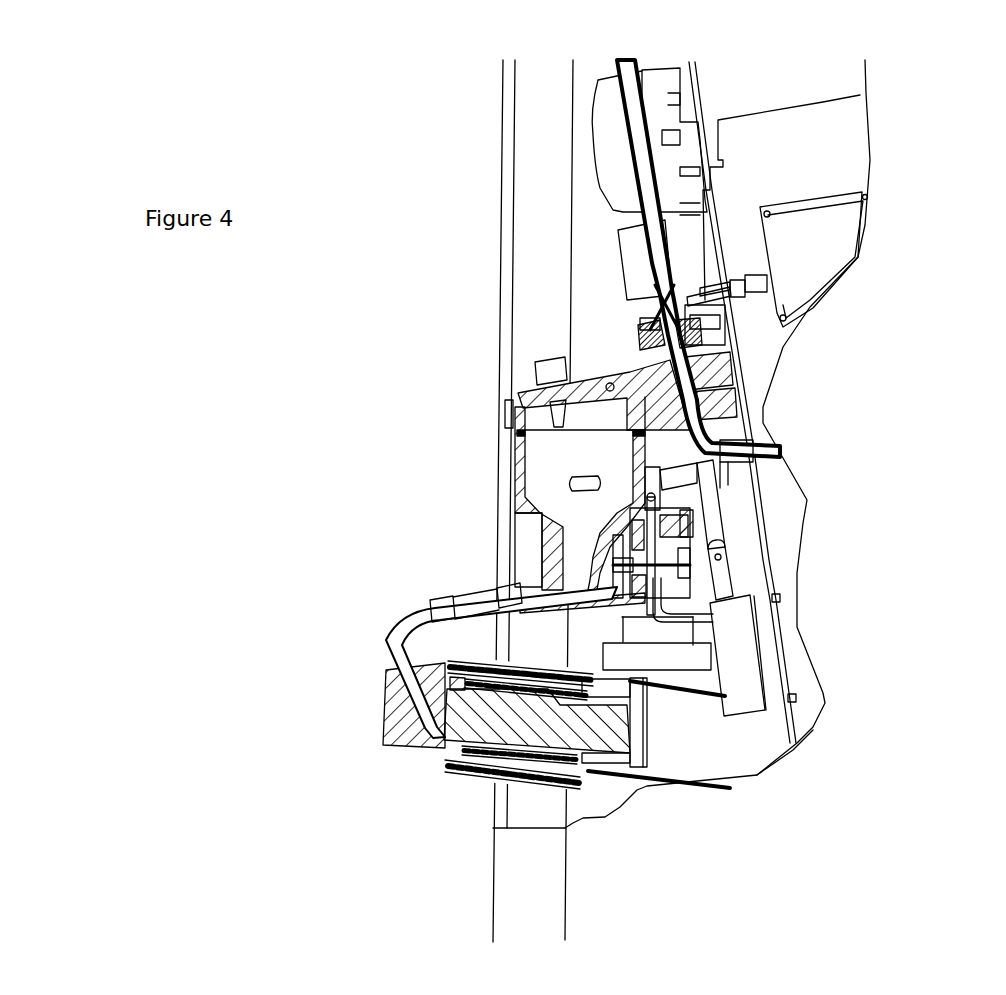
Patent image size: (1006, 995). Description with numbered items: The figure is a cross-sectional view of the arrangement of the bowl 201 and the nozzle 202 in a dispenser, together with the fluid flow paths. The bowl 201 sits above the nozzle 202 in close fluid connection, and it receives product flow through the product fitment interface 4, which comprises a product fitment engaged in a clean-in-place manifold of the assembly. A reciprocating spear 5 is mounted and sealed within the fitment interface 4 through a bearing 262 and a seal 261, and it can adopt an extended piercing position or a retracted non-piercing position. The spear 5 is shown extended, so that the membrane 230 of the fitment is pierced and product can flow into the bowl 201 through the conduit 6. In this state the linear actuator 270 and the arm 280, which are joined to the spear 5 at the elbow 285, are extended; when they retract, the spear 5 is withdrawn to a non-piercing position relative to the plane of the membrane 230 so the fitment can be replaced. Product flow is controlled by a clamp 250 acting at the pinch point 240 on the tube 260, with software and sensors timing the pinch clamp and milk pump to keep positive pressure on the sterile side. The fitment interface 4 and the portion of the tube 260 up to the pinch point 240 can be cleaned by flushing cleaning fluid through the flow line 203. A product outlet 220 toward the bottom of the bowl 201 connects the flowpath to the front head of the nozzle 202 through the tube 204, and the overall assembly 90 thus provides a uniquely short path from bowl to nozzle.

The product fitment interface 4 is at (572, 340).
The reciprocating spear 5 is at (657, 312).
The conduit 6 is at (652, 403).
The tube assembly 90 is at (408, 779).
The bowl 201 is at (527, 477).
The nozzle 202 is at (383, 707).
The flow line 203 is at (755, 450).
The tube 204 is at (400, 636).
The product outlet 220 is at (527, 597).
The membrane 230 is at (567, 304).
The pinch point 240 is at (672, 282).
The clamp 250 is at (693, 283).
The tube 260 is at (768, 290).
The seal 261 is at (710, 378).
The bearing 262 is at (702, 410).
The linear actuator 270 is at (742, 570).
The arm 280 is at (732, 503).
The elbow 285 is at (832, 402).